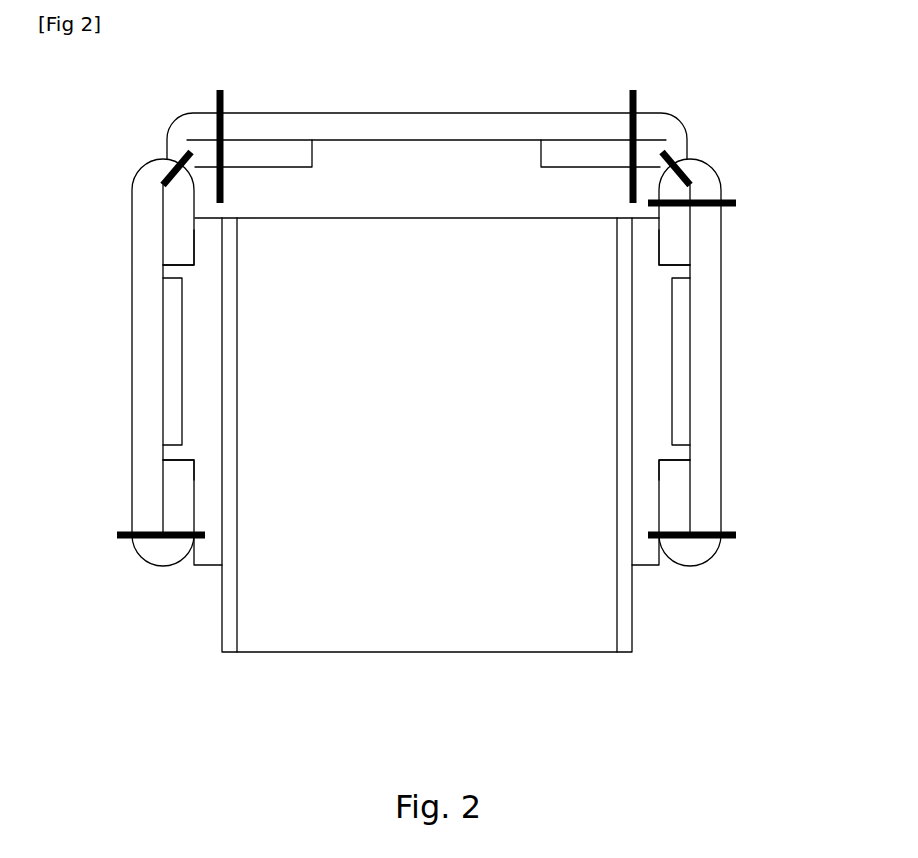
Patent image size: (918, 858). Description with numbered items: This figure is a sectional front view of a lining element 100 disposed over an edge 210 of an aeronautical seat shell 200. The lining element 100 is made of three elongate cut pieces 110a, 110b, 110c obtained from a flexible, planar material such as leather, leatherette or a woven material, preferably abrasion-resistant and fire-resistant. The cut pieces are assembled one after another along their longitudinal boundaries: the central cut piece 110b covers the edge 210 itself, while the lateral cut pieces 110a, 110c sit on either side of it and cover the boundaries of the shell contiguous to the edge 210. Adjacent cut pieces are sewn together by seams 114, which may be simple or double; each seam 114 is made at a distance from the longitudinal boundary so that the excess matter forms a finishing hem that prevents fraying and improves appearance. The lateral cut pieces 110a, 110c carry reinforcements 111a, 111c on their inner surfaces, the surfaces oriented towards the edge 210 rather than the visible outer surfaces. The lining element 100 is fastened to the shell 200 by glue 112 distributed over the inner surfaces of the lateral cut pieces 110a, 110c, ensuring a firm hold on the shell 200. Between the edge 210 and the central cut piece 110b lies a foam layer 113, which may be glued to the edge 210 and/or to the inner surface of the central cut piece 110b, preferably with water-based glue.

The lining element 100 is at (672, 126).
The lateral cut piece 110a is at (140, 340).
The central cut piece 110b is at (388, 122).
The lateral cut piece 110c is at (712, 348).
The reinforcement 111a is at (173, 395).
The reinforcement 111c is at (682, 430).
The glue 112 is at (203, 261).
The foam layer 113 is at (482, 167).
The seam 114 is at (177, 166).
The aeronautical seat shell 200 is at (470, 637).
The edge 210 is at (345, 218).